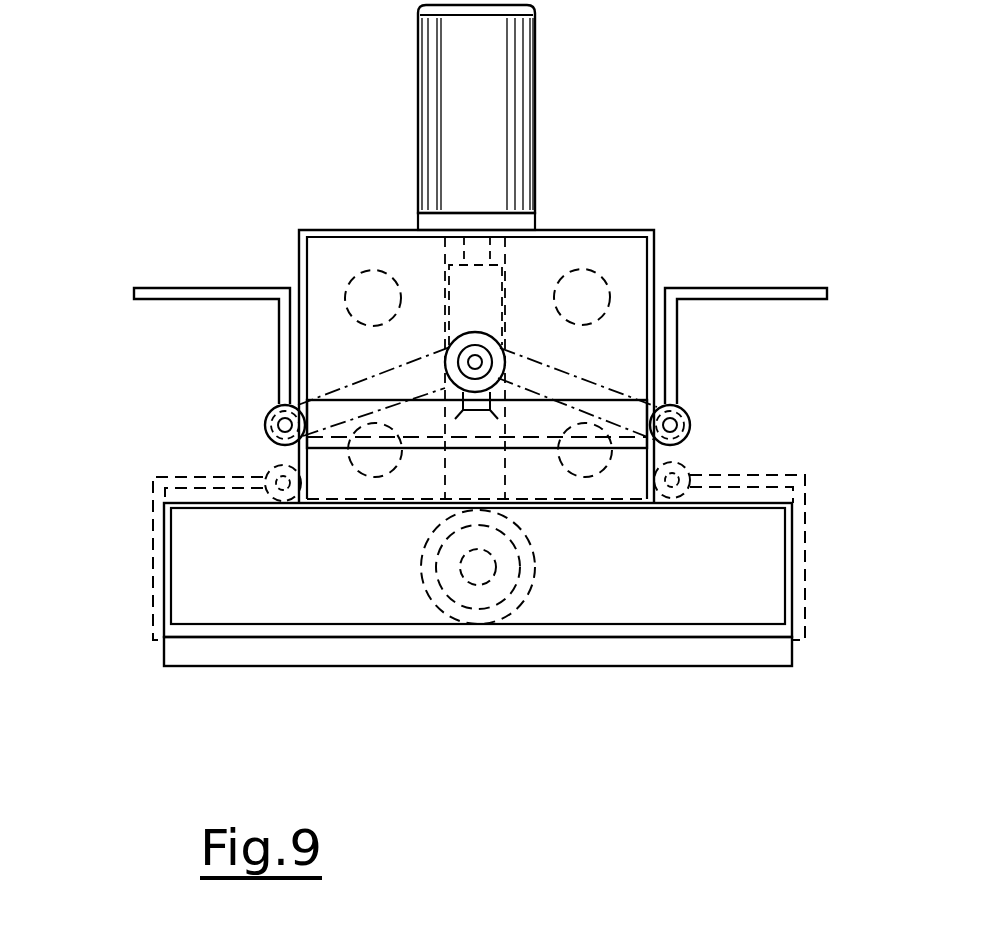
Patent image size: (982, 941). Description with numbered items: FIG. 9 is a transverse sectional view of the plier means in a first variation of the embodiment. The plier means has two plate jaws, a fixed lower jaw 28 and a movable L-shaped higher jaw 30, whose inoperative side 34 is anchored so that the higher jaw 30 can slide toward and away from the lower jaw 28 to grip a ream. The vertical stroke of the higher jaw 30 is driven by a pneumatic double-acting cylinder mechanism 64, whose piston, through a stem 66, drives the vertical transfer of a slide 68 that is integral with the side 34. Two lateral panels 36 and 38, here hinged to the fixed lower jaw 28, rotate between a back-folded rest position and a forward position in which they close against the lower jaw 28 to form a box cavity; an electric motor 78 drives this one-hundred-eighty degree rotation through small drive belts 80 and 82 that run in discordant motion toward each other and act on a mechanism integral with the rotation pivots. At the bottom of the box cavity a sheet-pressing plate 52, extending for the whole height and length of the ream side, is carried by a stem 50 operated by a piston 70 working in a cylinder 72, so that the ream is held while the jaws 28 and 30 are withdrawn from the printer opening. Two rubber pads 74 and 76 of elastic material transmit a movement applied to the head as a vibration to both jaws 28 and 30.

The lower jaw 28 is at (253, 648).
The higher jaw 30 is at (617, 413).
The inoperative side 34 is at (628, 260).
The lateral panel 36 is at (770, 292).
The lateral panel 38 is at (200, 290).
The stem 50 is at (489, 586).
The sheet-pressing plate 52 is at (663, 595).
The pneumatic double-acting cylinder mechanism 64 is at (515, 80).
The stem 66 is at (470, 256).
The slide 68 is at (500, 282).
The piston 70 is at (463, 590).
The cylinder 72 is at (527, 592).
The rubber pad 74 is at (376, 272).
The rubber pad 76 is at (366, 476).
The electric motor 78 is at (492, 358).
The drive belt 80 is at (590, 380).
The drive belt 82 is at (345, 382).